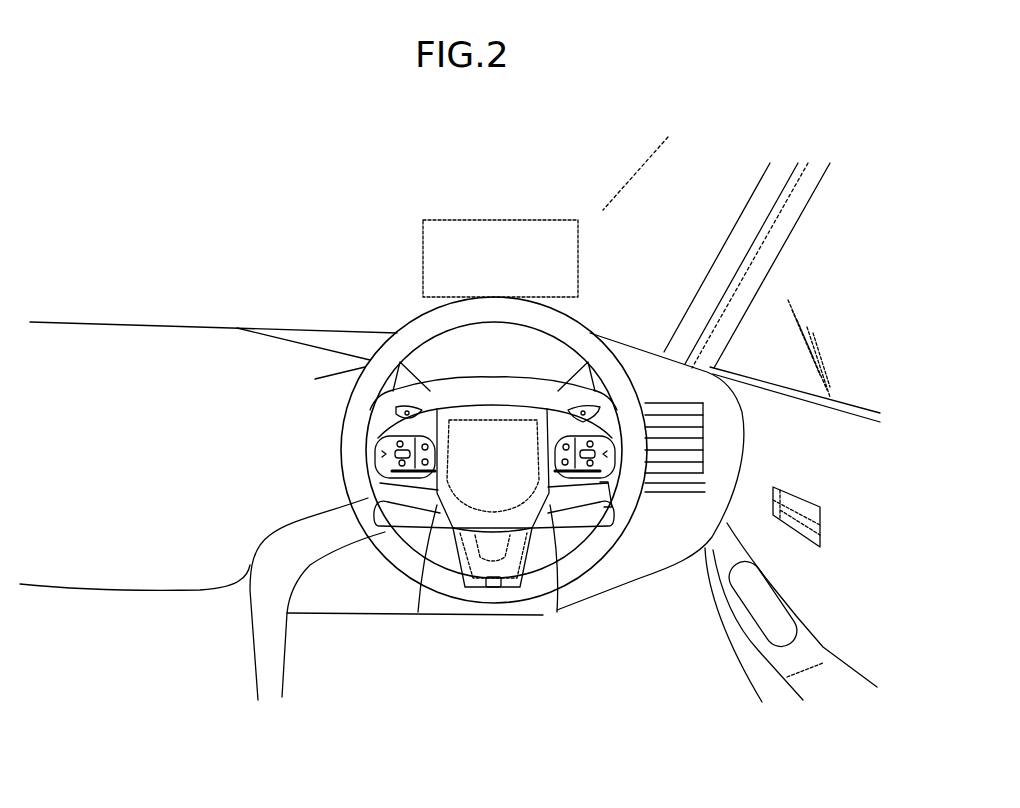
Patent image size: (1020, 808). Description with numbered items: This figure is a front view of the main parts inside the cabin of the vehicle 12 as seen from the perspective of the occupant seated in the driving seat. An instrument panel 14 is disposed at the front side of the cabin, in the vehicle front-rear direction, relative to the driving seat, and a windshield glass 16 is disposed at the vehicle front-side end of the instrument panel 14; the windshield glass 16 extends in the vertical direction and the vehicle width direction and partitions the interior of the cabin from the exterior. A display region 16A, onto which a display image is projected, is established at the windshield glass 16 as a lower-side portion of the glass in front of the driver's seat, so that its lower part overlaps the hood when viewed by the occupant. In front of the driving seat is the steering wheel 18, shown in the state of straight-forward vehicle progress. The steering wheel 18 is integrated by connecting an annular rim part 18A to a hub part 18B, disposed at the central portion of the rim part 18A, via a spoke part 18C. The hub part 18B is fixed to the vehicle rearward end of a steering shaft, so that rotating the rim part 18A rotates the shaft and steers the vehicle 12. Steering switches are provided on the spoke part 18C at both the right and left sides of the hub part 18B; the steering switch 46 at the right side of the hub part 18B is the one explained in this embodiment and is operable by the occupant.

The vehicle 12 is at (133, 628).
The instrument panel 14 is at (240, 367).
The windshield glass 16 is at (168, 293).
The display region 16A is at (482, 220).
The steering wheel 18 is at (465, 480).
The rim part 18A is at (587, 558).
The hub part 18B is at (463, 490).
The spoke part 18C is at (385, 482).
The steering switch 46 is at (620, 443).